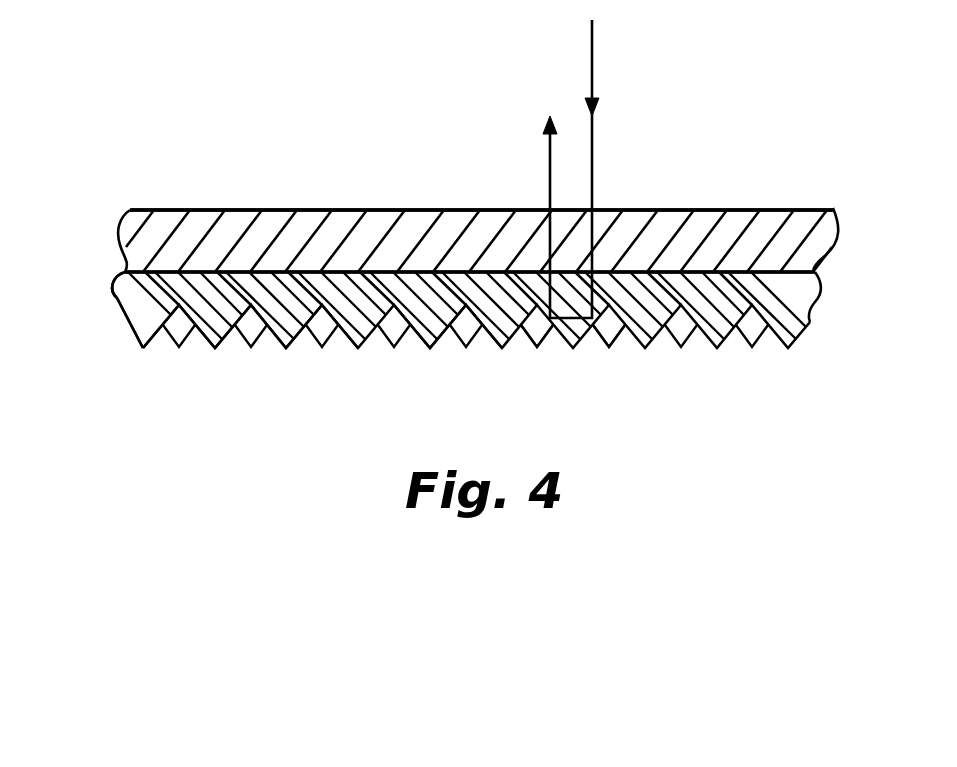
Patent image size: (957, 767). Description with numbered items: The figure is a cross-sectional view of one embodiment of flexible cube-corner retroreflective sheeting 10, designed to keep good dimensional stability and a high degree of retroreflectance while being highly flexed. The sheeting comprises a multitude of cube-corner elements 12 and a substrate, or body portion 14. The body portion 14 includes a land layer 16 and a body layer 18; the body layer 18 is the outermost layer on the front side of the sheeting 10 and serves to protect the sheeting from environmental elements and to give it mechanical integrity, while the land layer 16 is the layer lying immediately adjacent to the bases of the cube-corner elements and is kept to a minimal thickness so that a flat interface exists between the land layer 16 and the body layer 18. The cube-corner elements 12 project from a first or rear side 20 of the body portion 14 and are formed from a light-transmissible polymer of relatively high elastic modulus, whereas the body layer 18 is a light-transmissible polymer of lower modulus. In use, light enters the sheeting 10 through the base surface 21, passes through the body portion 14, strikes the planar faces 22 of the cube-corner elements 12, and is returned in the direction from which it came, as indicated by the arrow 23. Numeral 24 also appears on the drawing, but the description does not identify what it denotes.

The cube-corner retroreflective sheeting 10 is at (713, 146).
The cube-corner elements 12 is at (301, 351).
The body portion 14 is at (88, 210).
The land layer 16 is at (826, 270).
The body layer 18 is at (351, 228).
The rear side 20 is at (114, 294).
The base surface 21 is at (243, 210).
The planar faces 22 is at (463, 335).
The arrow 23 is at (590, 78).
The secondary prism structures 24 is at (603, 352).